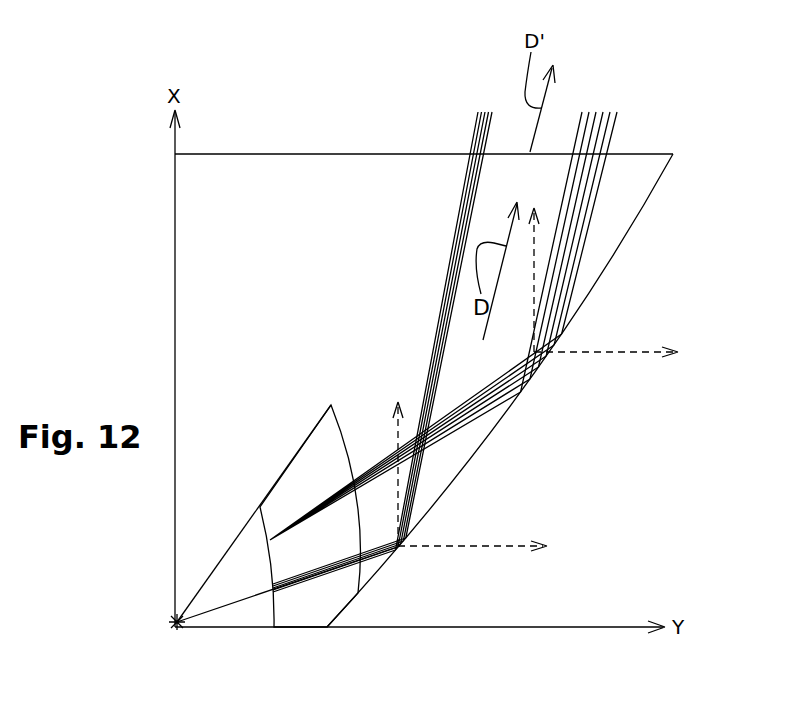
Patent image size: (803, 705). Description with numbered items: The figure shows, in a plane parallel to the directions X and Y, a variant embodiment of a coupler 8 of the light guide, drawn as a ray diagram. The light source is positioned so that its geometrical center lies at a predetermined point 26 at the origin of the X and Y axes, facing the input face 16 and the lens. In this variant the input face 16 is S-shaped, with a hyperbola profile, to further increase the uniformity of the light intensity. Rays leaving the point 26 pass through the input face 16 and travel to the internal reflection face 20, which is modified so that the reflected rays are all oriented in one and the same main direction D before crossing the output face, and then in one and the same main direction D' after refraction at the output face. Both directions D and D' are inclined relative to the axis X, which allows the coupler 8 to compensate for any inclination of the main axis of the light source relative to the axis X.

The coupler 8 is at (632, 505).
The internal reflection face 20 is at (648, 197).
The input face 16 is at (298, 616).
The predetermined point 26 is at (181, 629).